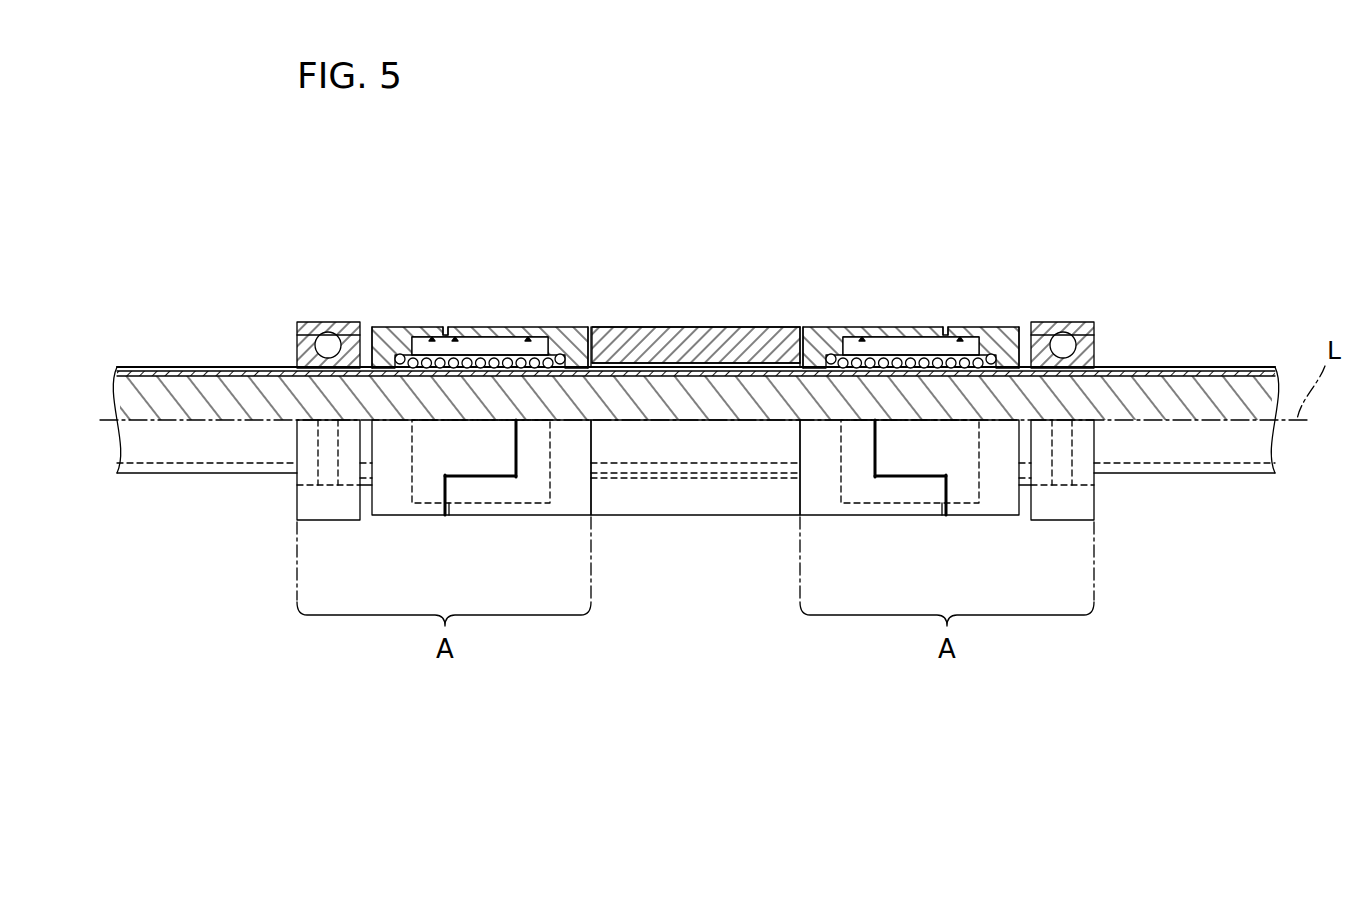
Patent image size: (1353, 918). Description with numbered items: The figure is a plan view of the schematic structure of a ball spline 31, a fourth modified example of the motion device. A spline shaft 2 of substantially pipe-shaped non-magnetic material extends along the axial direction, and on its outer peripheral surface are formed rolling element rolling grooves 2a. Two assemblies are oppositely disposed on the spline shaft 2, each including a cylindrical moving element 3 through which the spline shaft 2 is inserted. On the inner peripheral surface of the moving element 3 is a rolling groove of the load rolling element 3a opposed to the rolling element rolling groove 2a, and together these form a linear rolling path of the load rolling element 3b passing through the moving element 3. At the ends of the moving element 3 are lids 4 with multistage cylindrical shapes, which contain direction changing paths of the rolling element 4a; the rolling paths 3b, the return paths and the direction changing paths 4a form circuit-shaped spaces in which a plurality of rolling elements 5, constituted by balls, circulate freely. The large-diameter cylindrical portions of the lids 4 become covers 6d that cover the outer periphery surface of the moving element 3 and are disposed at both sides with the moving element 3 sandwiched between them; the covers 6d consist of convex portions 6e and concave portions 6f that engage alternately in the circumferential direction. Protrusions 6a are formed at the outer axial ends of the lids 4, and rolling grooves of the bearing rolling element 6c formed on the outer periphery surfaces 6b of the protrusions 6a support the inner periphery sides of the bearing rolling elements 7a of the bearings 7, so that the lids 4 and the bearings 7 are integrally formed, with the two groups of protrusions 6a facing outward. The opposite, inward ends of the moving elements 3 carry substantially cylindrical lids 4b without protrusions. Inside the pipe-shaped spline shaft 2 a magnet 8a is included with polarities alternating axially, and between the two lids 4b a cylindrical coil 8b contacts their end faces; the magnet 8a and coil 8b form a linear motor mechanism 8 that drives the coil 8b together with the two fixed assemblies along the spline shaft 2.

The spline shaft 2 is at (158, 480).
The rolling element rolling groove 2a is at (157, 366).
The moving element 3 is at (490, 336).
The rolling groove of the load rolling element 3a is at (462, 369).
The rolling path of the load rolling element 3b is at (510, 350).
The lid 4 is at (413, 333).
The direction changing path of the rolling element 4a is at (400, 337).
The lid 4b is at (589, 345).
The rolling element 5 is at (428, 368).
The protrusion 6a is at (349, 347).
The outer periphery surface of the protrusion 6b is at (297, 345).
The rolling groove of the bearing rolling element 6c is at (326, 486).
The cover 6d is at (468, 327).
The convex portion 6e is at (475, 488).
The concave portion 6f is at (455, 490).
The bearing 7 is at (338, 313).
The bearing rolling element 7a is at (328, 345).
The linear motor mechanism 8 is at (692, 262).
The magnet 8a is at (690, 385).
The coil 8b is at (756, 340).
The ball spline 31 is at (1112, 127).